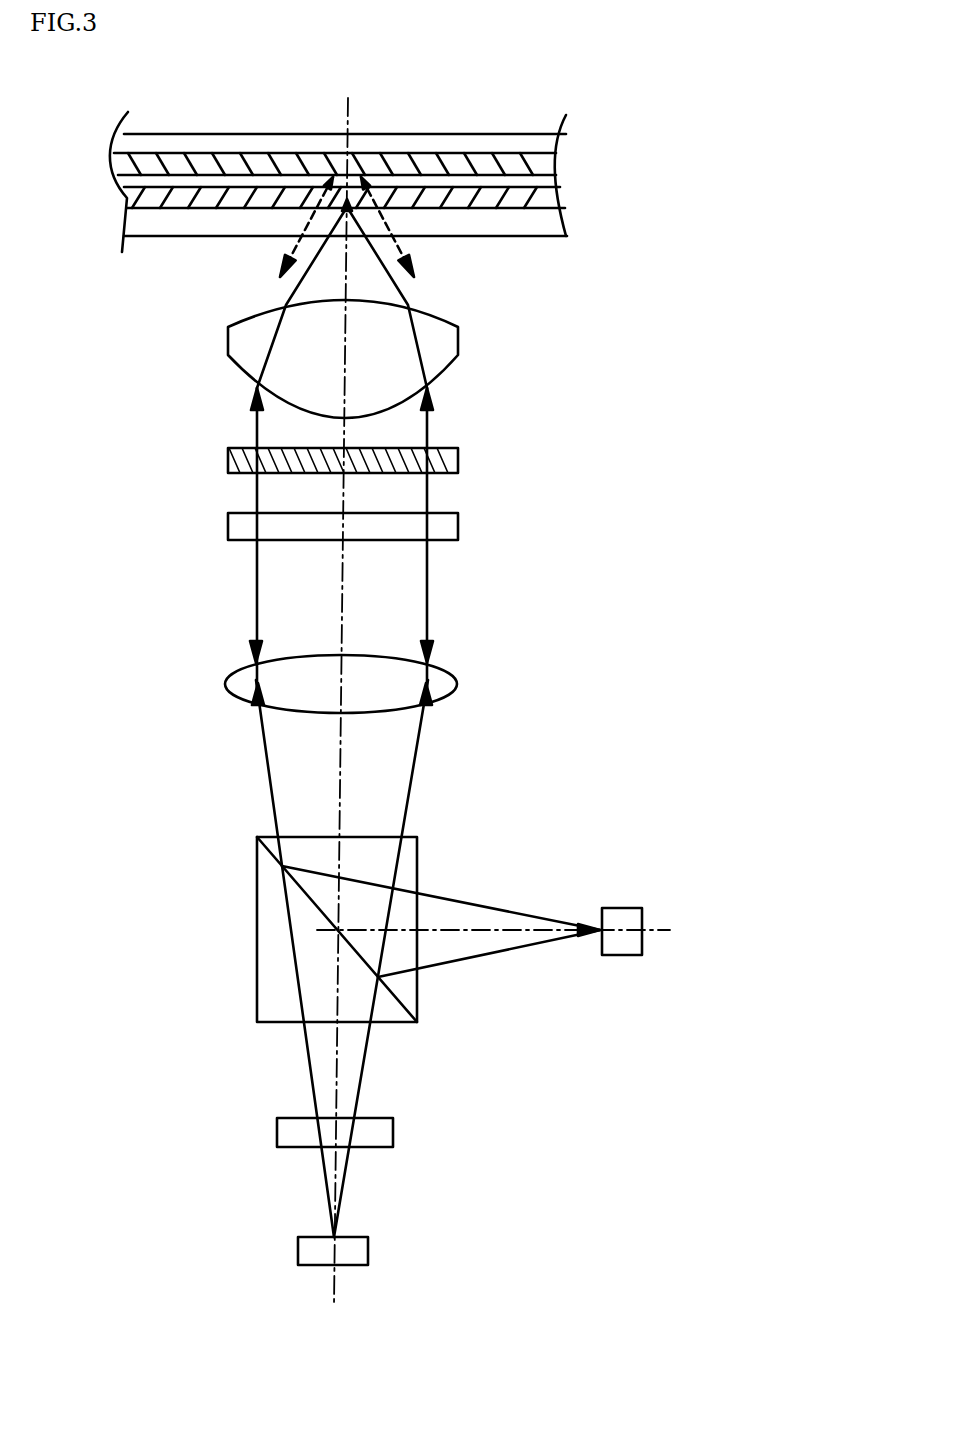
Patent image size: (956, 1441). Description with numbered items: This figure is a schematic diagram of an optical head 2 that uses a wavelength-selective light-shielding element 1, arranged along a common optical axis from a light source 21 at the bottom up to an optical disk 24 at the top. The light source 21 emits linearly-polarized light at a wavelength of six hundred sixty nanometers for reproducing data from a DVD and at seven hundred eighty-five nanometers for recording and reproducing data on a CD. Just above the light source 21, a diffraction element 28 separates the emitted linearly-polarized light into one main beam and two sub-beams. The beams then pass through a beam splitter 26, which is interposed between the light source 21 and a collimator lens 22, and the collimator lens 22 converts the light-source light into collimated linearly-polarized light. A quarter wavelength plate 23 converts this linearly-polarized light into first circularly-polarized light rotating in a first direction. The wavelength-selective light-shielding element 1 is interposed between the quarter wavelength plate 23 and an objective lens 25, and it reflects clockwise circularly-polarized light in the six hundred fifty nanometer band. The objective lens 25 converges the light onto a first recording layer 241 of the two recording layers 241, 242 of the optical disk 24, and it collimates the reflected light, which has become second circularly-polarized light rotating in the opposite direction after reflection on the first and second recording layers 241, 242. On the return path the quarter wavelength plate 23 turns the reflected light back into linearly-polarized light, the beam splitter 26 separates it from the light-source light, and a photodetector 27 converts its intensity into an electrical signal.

The wavelength-selective light-shielding element 1 is at (235, 460).
The optical head 2 is at (607, 517).
The light source 21 is at (310, 1252).
The collimator lens 22 is at (235, 686).
The quarter wavelength plate 23 is at (238, 528).
The optical disk 24 is at (479, 144).
The first recording layer 241 is at (555, 198).
The second recording layer 242 is at (550, 165).
The objective lens 25 is at (240, 335).
The beam splitter 26 is at (268, 903).
The photodetector 27 is at (623, 917).
The diffraction element 28 is at (290, 1133).